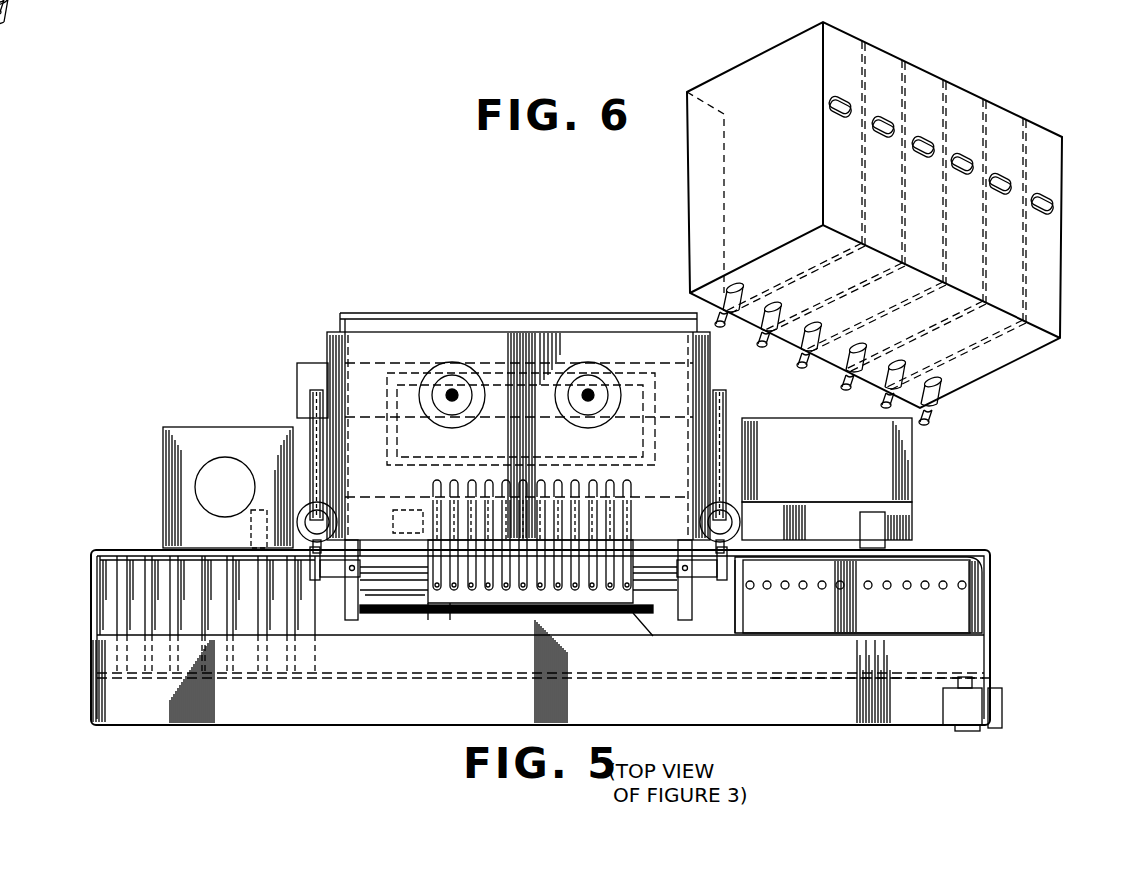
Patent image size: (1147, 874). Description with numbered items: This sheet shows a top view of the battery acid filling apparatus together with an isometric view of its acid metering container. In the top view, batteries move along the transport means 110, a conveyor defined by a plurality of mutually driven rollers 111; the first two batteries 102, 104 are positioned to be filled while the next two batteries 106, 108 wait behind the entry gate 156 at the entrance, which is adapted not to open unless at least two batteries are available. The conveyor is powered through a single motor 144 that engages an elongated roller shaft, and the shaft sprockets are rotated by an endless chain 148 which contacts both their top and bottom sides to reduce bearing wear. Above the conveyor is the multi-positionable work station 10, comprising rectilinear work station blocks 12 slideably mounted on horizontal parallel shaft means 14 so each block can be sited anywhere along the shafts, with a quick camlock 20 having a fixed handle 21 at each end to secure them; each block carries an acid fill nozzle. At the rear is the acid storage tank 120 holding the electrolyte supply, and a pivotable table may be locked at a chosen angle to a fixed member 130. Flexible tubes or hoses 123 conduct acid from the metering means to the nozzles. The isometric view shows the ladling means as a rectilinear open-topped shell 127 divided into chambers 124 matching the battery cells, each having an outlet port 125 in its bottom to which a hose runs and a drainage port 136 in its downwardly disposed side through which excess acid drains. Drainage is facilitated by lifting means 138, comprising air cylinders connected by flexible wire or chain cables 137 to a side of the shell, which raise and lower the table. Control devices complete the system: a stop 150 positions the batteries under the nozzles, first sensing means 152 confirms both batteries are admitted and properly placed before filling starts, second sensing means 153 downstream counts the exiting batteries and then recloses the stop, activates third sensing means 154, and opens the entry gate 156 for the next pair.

In FIG. 5, the multi-positionable work station 10 is at (560, 604).
In FIG. 5, the work station blocks 12 is at (540, 598).
In FIG. 5, the shaft means 14 is at (378, 568).
In FIG. 5, the quick camlock 20 is at (648, 636).
In FIG. 5, the fixed handle 21 is at (342, 605).
In FIG. 5, the battery 102 is at (468, 620).
In FIG. 5, the battery 104 is at (652, 568).
In FIG. 5, the battery 106 is at (778, 573).
In FIG. 5, the battery 108 is at (958, 608).
In FIG. 5, the transport means 110 is at (91, 700).
In FIG. 5, the mutually driven rollers 111 is at (135, 600).
In FIG. 5, the acid storage tank 120 is at (590, 313).
In FIG. 6, the flexible tubes or hoses 123 is at (772, 330).
In FIG. 5, the flexible tubes or hoses 123 is at (580, 560).
In FIG. 6, the chambers 124 is at (923, 90).
In FIG. 6, the outlet ports 125 is at (770, 300).
In FIG. 6, the open-topped shell 127 is at (1062, 256).
In FIG. 5, the fixed member 130 is at (510, 400).
In FIG. 6, the drainage port 136 is at (915, 155).
In FIG. 5, the flexible wire or chain cables 137 is at (310, 447).
In FIG. 5, the lifting means 138 is at (452, 395).
In FIG. 5, the motor 144 is at (947, 727).
In FIG. 5, the endless chain 148 is at (797, 676).
In FIG. 5, the stop 150 is at (415, 595).
In FIG. 5, the first sensing means 152 is at (405, 550).
In FIG. 5, the second sensing means 153 is at (251, 527).
In FIG. 5, the third sensing means 154 is at (912, 520).
In FIG. 5, the entry gate 156 is at (735, 628).